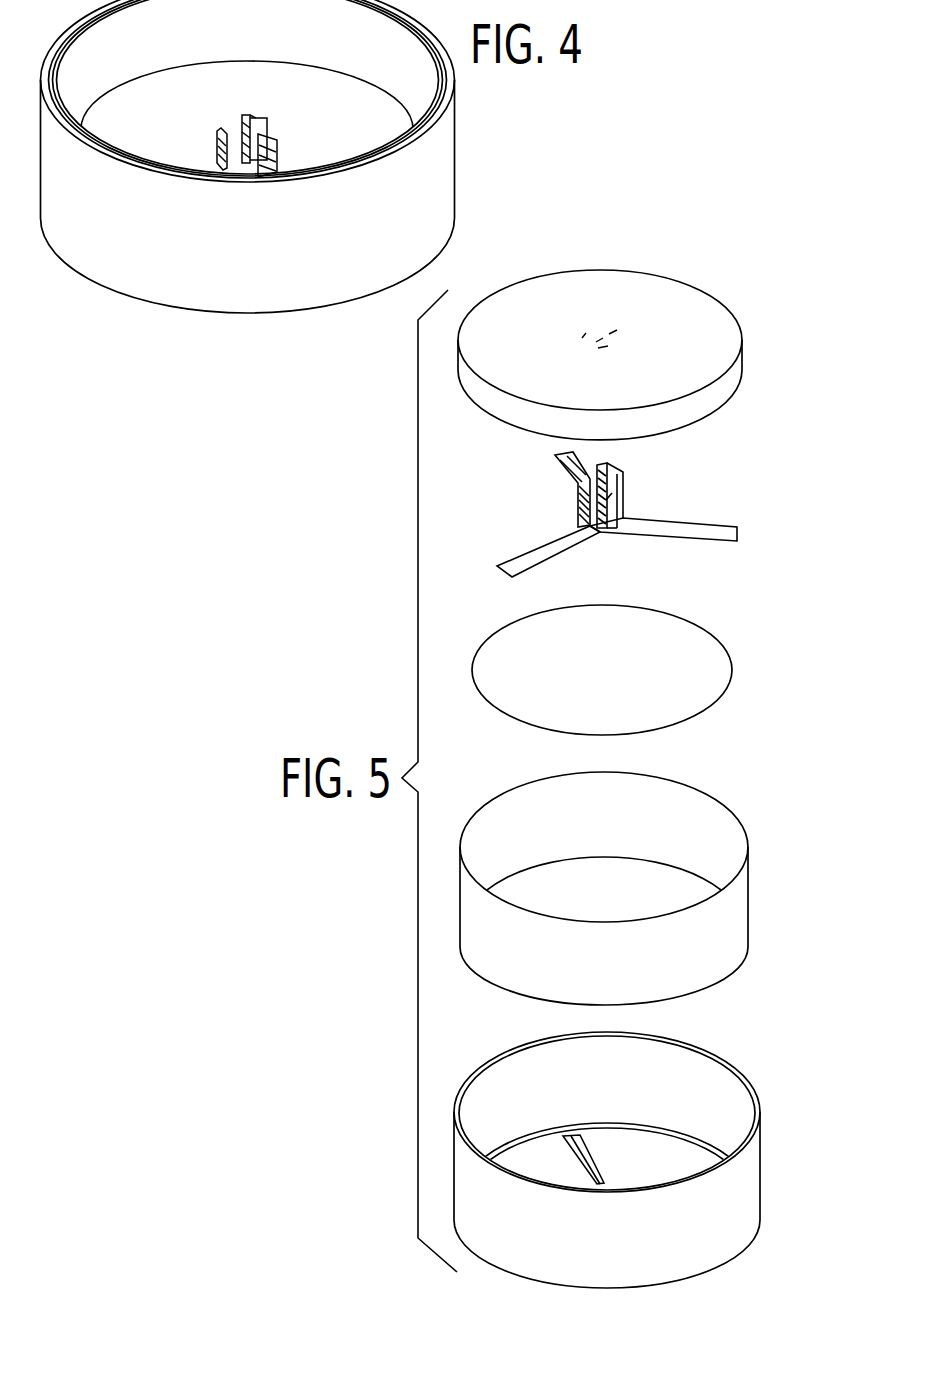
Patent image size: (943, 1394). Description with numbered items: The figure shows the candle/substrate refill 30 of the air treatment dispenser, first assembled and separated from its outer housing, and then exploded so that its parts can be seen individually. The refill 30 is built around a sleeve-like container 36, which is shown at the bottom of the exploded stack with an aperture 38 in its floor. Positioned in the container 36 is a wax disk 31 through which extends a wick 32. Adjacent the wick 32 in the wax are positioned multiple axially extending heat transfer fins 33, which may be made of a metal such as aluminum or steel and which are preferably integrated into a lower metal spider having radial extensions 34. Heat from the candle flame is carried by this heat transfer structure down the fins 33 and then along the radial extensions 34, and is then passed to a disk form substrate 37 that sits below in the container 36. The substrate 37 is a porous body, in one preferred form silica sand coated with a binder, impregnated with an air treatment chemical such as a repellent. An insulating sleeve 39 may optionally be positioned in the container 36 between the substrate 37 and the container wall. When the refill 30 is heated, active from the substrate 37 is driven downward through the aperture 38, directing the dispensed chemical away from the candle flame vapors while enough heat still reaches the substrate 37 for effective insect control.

In FIG. 4, the candle/substrate refill 30 is at (490, 157).
In FIG. 4, the wax disk 31 is at (158, 146).
In FIG. 5, the wax disk 31 is at (737, 367).
In FIG. 4, the wick 32 is at (243, 116).
In FIG. 5, the wick 32 is at (606, 464).
In FIG. 4, the heat transfer fins 33 is at (271, 148).
In FIG. 5, the heat transfer fins 33 is at (577, 486).
In FIG. 5, the radial extensions 34 is at (647, 509).
In FIG. 4, the sleeve-like container 36 is at (237, 266).
In FIG. 5, the sleeve-like container 36 is at (594, 1254).
In FIG. 5, the disk form substrate 37 is at (702, 660).
In FIG. 5, the aperture 38 is at (550, 1162).
In FIG. 5, the insulating sleeve 39 is at (733, 897).